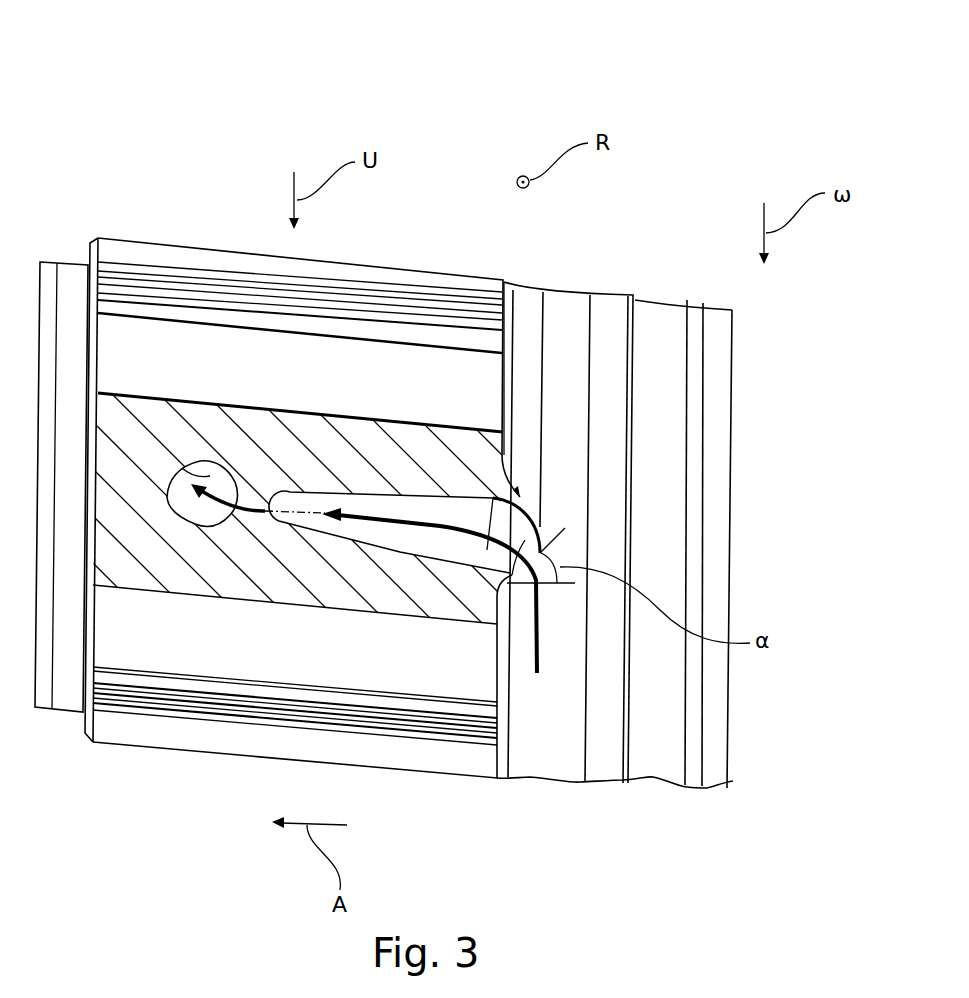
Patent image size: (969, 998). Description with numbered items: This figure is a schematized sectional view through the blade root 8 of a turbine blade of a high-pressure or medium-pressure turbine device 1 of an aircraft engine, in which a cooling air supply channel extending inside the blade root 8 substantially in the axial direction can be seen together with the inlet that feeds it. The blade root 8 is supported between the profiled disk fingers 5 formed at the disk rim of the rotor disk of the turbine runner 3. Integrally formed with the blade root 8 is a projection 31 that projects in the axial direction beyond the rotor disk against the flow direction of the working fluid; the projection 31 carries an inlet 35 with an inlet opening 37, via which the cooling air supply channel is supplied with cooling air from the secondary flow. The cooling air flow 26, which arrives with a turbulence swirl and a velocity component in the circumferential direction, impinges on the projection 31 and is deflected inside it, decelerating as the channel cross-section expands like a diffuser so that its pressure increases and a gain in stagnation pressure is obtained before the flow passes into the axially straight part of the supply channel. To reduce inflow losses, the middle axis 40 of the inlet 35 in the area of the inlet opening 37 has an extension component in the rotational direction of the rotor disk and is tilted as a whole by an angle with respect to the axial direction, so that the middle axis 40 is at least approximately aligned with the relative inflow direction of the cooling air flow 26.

The turbine device 1 is at (78, 85).
The turbine runner 3 is at (189, 228).
The disk fingers 5 is at (393, 290).
The blade root 8 is at (266, 432).
The cooling air flow 26 is at (535, 673).
The projection 31 is at (541, 532).
The inlet 35 is at (521, 496).
The inlet opening 37 is at (540, 555).
The middle axis 40 is at (503, 530).